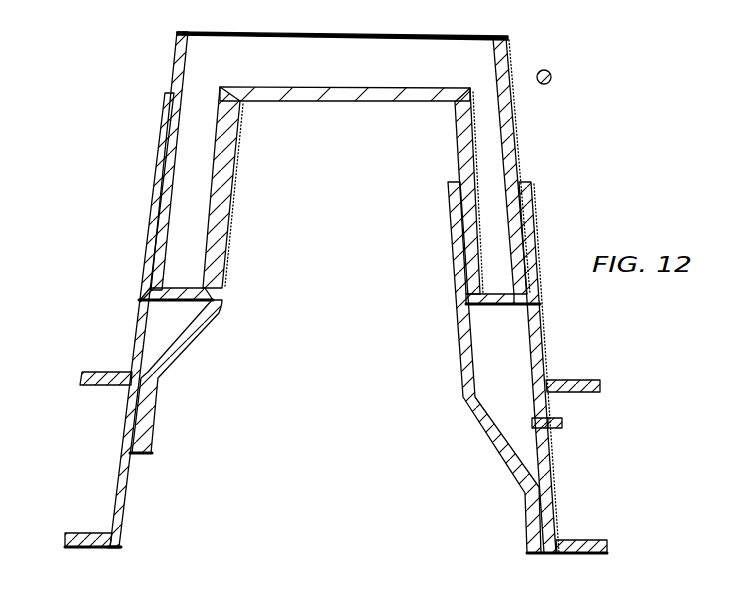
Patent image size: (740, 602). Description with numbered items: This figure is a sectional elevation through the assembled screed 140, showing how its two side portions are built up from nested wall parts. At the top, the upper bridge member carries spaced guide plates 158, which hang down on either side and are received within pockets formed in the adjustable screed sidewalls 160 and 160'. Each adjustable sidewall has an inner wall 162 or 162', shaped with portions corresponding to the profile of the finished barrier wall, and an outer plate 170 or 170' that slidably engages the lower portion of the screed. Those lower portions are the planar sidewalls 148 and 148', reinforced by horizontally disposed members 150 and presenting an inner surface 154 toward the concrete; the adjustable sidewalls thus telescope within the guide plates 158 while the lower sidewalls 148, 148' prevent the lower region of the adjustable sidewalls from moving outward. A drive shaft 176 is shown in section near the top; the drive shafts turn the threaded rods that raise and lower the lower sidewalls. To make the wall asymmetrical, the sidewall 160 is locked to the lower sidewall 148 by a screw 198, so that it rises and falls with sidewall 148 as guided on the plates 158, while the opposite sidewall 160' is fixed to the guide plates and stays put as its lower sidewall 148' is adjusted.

The screed 140 is at (80, 240).
The planar sidewall 148 is at (528, 367).
The planar sidewall 148' is at (138, 376).
The horizontally disposed member 150 is at (113, 372).
The inner surface 154 is at (123, 520).
The guide plate 158 is at (225, 104).
The adjustable screed sidewall 160 is at (535, 367).
The adjustable screed sidewall 160' is at (145, 320).
The inner wall 162 is at (442, 197).
The inner wall 162' is at (247, 187).
The outer plate 170 is at (544, 166).
The outer plate 170' is at (141, 161).
The drive shaft 176 is at (552, 76).
The screw 198 is at (561, 419).